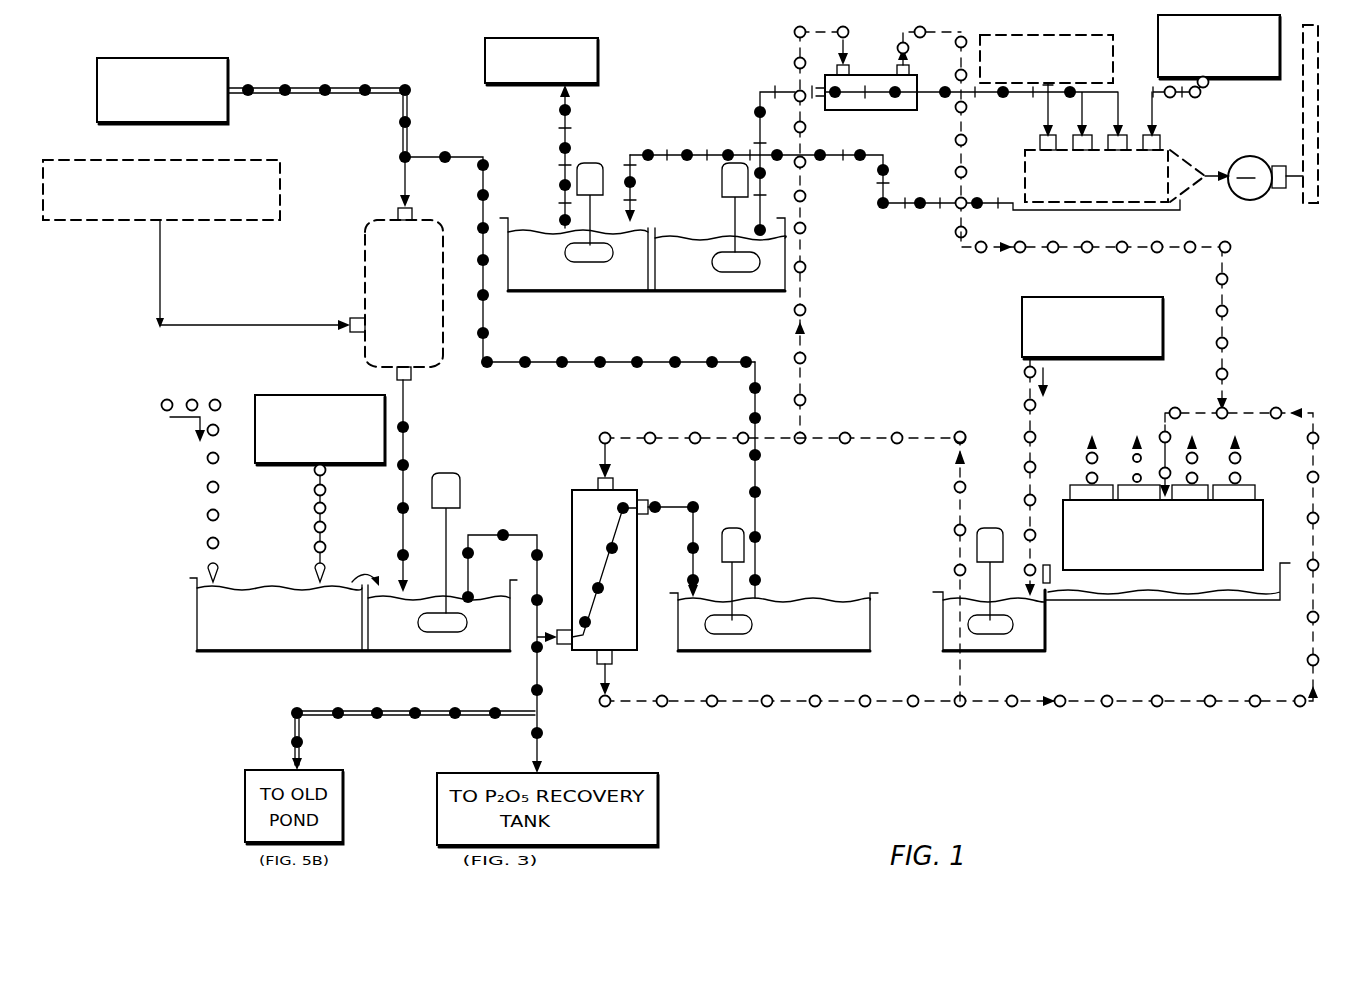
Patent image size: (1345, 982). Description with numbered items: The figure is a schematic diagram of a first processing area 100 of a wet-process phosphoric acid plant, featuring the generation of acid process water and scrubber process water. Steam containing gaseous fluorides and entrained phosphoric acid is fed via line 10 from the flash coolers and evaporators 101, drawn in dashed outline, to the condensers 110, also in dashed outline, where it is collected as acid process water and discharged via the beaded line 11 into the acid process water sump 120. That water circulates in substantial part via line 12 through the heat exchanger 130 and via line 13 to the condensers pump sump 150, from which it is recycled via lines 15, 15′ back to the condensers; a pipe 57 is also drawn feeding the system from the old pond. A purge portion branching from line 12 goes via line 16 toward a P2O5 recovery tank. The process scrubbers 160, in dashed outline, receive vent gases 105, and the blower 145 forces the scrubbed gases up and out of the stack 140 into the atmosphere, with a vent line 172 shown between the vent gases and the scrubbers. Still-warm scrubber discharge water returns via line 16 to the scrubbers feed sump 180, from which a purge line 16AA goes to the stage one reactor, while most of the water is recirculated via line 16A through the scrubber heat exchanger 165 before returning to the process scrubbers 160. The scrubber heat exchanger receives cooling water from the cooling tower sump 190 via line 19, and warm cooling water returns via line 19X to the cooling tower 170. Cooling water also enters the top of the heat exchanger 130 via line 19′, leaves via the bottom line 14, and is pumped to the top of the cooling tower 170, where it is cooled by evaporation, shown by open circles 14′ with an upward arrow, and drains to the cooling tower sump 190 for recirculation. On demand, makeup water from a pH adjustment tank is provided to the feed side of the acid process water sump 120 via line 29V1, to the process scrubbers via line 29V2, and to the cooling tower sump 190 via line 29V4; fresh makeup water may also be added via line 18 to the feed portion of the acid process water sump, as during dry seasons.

The first processing area 100 is at (410, 66).
The pond water feed pipe 57 is at (306, 91).
The flash coolers and evaporators 101 is at (270, 158).
The steam line 10 is at (160, 294).
The condensers 110 is at (365, 258).
The condenser recycle line 15′ is at (436, 157).
The condenser recycle line 15 is at (758, 520).
The acid process water line 11 is at (403, 446).
The purge line 16AA is at (565, 134).
The scrubber discharge water line 16 is at (630, 154).
The scrubber recirculation line 16A is at (760, 131).
The scrubber heat exchanger 165 is at (882, 74).
The vent gases 105 is at (1138, 28).
The vent gas line 172 is at (1046, 124).
The process scrubbers 160 is at (1018, 198).
The pH adjustment valve 29V2 is at (1199, 98).
The blower 145 is at (1238, 156).
The stack 140 is at (1302, 210).
The cooling water inlet line 19′ is at (955, 178).
The cooling water line 19 is at (863, 436).
The scrubbers feed sump 180 is at (763, 292).
The warm cooling water return line 19X is at (1224, 325).
The makeup water line 29V4 is at (1026, 406).
The cooling water outlet line 14 is at (1206, 412).
The evaporative cooling spray 14′ is at (1240, 468).
The cooling tower 170 is at (1060, 498).
The fresh makeup water line 18 is at (210, 484).
The makeup water line 29V1 is at (316, 538).
The acid process water circulation line 12 is at (468, 530).
The heat exchanger 130 is at (572, 506).
The heat exchanger outlet line 13 is at (671, 504).
The condensers pump sump 150 is at (798, 656).
The cooling tower sump 190 is at (942, 634).
The acid process water sump 120 is at (486, 657).